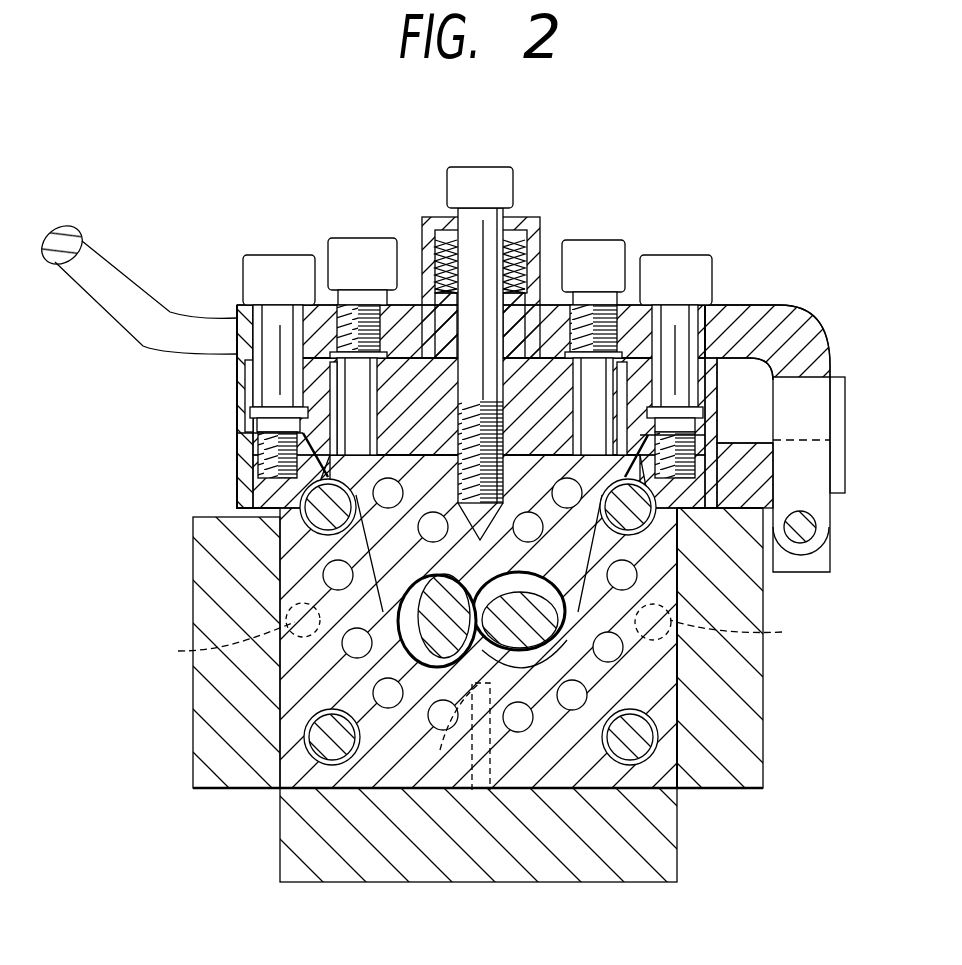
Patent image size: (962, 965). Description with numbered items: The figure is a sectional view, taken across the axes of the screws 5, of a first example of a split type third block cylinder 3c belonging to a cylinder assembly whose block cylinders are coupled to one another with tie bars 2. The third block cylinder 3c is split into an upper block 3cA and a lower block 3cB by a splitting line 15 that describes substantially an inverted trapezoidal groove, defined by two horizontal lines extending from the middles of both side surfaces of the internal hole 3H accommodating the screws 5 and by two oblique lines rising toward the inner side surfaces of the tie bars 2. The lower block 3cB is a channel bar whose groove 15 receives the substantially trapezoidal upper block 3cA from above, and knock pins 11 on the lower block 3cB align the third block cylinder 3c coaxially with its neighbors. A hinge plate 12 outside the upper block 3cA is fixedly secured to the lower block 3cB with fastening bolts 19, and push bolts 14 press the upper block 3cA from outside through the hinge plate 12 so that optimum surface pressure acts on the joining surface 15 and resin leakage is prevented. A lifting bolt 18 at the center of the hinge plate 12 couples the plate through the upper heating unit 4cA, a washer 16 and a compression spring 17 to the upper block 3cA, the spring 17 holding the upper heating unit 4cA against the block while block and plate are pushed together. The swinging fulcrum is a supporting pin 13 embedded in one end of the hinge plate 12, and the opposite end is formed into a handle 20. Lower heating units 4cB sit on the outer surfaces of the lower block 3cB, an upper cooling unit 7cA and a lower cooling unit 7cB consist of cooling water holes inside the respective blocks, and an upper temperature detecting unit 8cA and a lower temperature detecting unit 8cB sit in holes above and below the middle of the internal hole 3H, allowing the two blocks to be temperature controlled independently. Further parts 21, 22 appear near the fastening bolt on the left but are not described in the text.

The tie bars 2 is at (220, 547).
The third block cylinder 3c is at (181, 721).
The upper block 3cA is at (383, 535).
The lower block 3cB is at (627, 793).
The internal hole 3H is at (627, 793).
The upper heating unit 4cA is at (395, 400).
The lower heating units 4cB is at (228, 775).
The screws 5 is at (465, 648).
The upper cooling unit 7cA is at (318, 510).
The lower cooling unit 7cB is at (587, 693).
The upper temperature detecting unit 8cA is at (528, 602).
The lower temperature detecting unit 8cB is at (452, 735).
The knock pins 11 is at (477, 643).
The hinge plate 12 is at (715, 315).
The supporting pin 13 is at (810, 525).
The push bolts 14 is at (352, 257).
The splitting line 15 is at (318, 618).
The washer 16 is at (520, 310).
The compression spring 17 is at (513, 240).
The lifting bolt 18 is at (473, 180).
The fastening bolts 19 is at (278, 268).
The handle 20 is at (55, 265).
The threaded insert 21 is at (237, 427).
The plate 22 is at (237, 392).